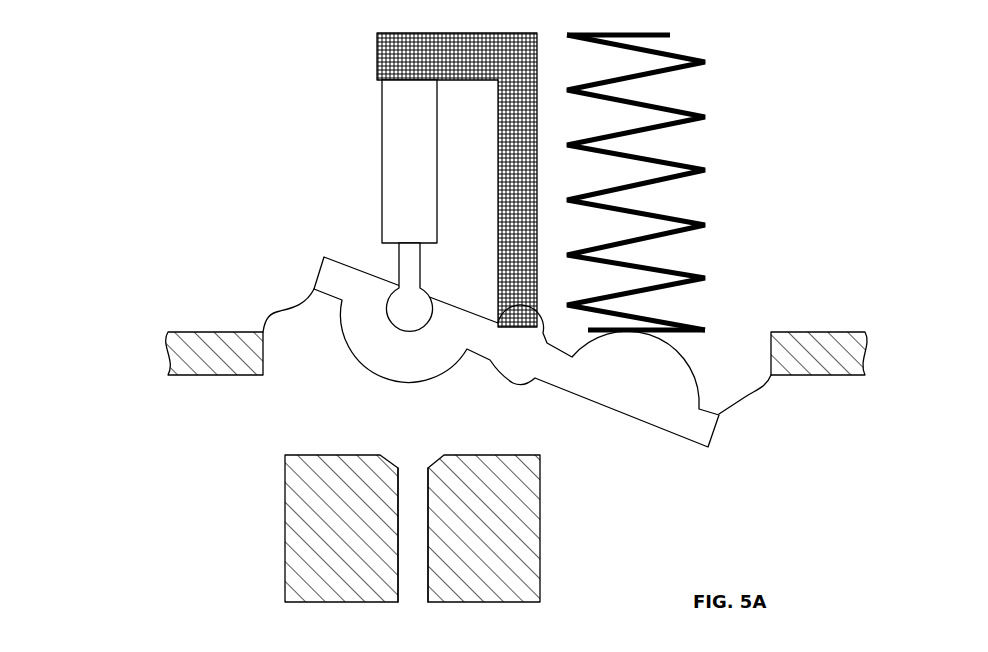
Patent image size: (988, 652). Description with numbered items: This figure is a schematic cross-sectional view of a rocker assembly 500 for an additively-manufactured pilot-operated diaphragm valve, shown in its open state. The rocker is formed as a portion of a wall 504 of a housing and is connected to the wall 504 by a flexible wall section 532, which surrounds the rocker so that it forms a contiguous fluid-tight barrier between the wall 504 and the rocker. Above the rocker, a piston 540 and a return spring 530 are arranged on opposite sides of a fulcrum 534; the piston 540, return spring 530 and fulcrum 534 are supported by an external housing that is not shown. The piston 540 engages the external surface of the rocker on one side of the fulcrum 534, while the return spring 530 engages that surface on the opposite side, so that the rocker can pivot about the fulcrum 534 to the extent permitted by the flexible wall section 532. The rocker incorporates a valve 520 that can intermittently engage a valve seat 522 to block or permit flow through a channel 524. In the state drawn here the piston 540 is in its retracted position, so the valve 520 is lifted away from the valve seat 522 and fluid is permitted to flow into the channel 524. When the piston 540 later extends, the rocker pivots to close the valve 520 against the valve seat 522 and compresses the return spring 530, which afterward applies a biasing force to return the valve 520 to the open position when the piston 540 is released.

The rocker assembly 500 is at (126, 86).
The wall 504 is at (175, 332).
The valve 520 is at (418, 388).
The valve seat 522 is at (423, 459).
The channel 524 is at (410, 593).
The return spring 530 is at (683, 218).
The flexible wall section 532 is at (270, 315).
The fulcrum 534 is at (498, 208).
The piston 540 is at (382, 160).